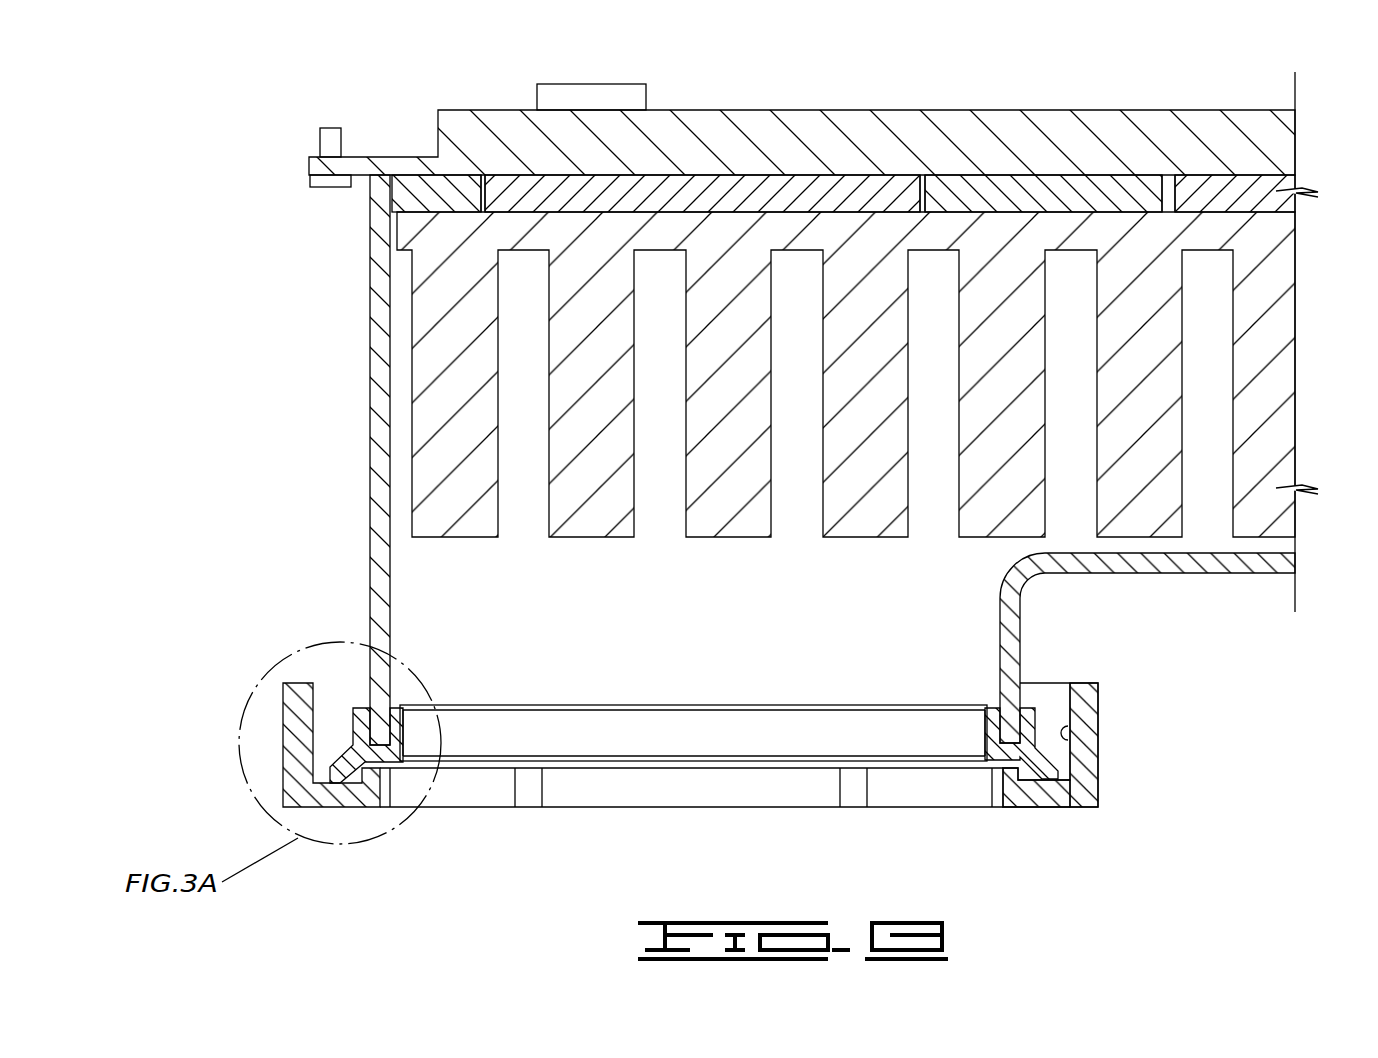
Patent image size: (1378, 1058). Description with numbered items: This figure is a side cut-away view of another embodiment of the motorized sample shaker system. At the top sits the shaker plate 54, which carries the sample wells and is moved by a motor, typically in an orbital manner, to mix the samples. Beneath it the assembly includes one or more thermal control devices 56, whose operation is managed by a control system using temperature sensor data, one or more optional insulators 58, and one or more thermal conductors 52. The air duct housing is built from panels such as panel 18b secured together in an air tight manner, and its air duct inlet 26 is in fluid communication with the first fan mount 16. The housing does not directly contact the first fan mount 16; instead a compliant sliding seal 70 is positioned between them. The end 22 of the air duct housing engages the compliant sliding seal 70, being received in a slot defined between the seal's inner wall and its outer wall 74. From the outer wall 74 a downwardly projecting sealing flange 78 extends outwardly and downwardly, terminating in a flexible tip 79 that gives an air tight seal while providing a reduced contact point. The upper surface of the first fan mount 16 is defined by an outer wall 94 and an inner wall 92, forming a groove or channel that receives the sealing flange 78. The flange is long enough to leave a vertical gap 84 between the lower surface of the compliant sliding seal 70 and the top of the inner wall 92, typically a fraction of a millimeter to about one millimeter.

The shaker plate 54 is at (483, 108).
The thermal control device 56 is at (843, 135).
The insulator 58 is at (1075, 185).
The thermal conductor 52 is at (446, 345).
The panel 18b is at (370, 458).
The air duct inlet 26 is at (450, 617).
The end 22 is at (1228, 575).
The first fan mount 16 is at (767, 770).
The outer wall 94 is at (1068, 733).
The outer wall 74 is at (1133, 761).
The sealing flange 78 is at (1021, 743).
The tip 79 is at (1040, 792).
The inner wall 92 is at (1040, 790).
The vertical gap 84 is at (990, 768).
The compliant sliding seal 70 is at (690, 735).